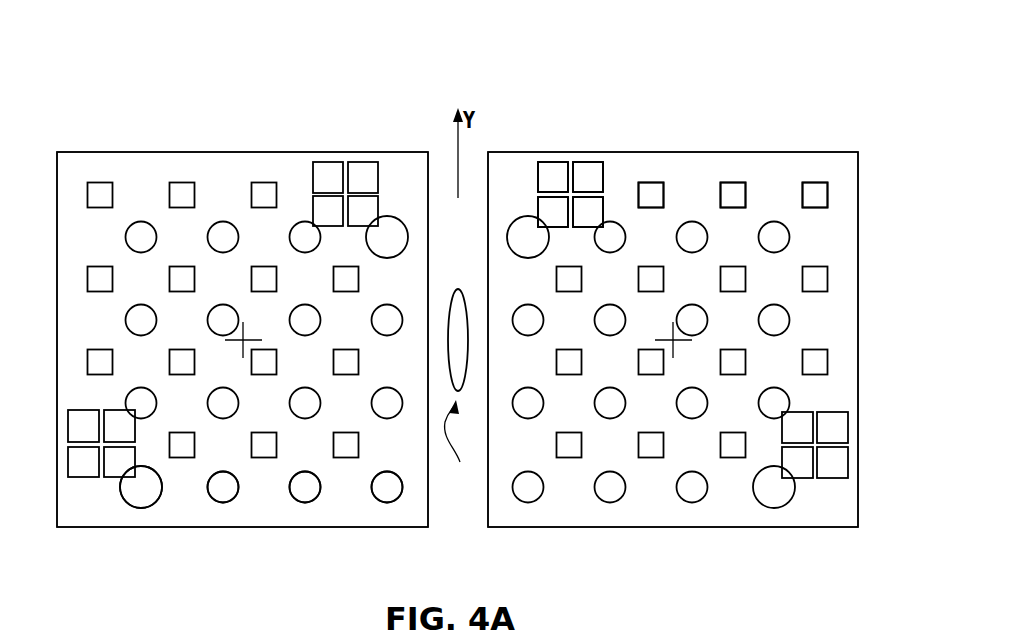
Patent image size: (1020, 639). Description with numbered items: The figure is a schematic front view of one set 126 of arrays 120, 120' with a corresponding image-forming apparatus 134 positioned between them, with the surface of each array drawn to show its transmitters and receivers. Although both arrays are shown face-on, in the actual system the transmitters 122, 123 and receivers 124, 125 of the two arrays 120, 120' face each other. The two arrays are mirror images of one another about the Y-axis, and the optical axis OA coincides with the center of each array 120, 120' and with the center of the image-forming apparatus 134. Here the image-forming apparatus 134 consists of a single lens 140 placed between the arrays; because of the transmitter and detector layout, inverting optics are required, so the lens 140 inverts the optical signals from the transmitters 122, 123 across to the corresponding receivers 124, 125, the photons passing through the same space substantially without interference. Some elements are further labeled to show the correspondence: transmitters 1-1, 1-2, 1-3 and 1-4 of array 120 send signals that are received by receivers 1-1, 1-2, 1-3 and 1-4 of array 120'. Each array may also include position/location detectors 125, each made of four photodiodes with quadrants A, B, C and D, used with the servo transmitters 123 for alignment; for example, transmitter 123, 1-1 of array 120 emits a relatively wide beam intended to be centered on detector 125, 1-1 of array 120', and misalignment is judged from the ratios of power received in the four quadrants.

The array 120 is at (242, 299).
The array 120' is at (690, 299).
The transmitter 122 is at (224, 305).
The servo transmitter 123 is at (518, 222).
The receiver 124 is at (358, 362).
The position/location detector 125 is at (394, 173).
The set of arrays 126 is at (168, 72).
The image-forming apparatus 134 is at (456, 446).
The lens 140 is at (461, 352).
The transmitter/receiver pair label 1-1 is at (410, 364).
The transmitter/receiver pair label 1-2 is at (224, 486).
The transmitter/receiver pair label 1-3 is at (305, 485).
The transmitter/receiver pair label 1-4 is at (387, 485).
The optical axis OA is at (243, 340).